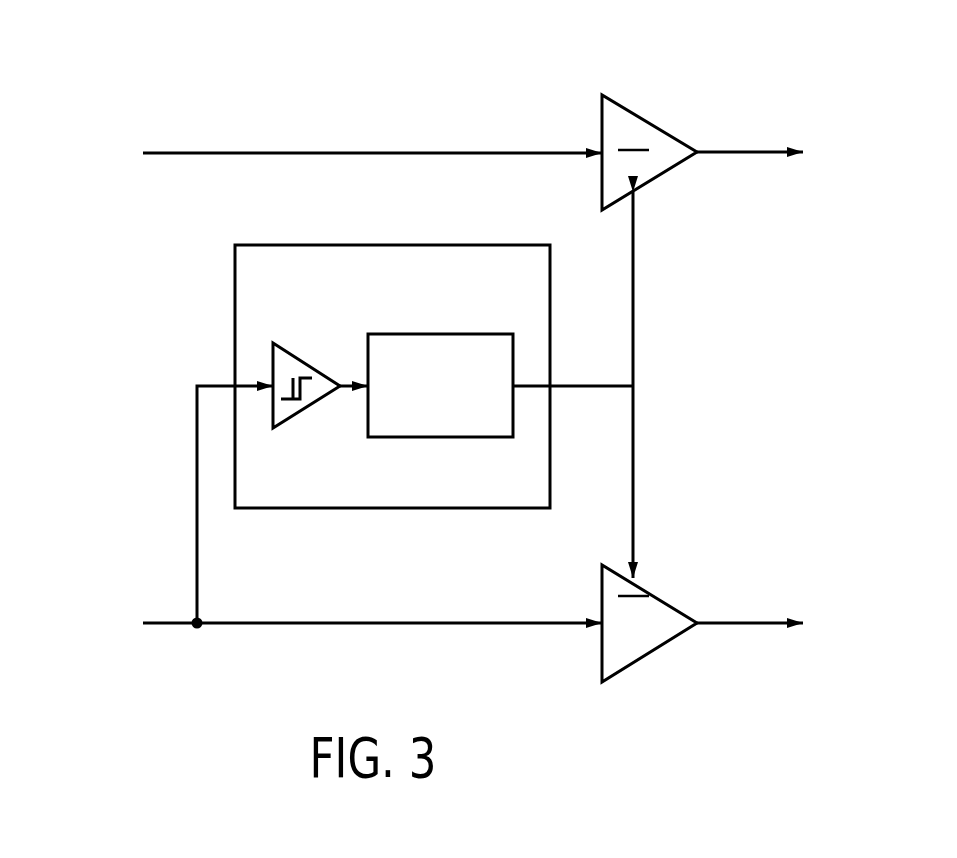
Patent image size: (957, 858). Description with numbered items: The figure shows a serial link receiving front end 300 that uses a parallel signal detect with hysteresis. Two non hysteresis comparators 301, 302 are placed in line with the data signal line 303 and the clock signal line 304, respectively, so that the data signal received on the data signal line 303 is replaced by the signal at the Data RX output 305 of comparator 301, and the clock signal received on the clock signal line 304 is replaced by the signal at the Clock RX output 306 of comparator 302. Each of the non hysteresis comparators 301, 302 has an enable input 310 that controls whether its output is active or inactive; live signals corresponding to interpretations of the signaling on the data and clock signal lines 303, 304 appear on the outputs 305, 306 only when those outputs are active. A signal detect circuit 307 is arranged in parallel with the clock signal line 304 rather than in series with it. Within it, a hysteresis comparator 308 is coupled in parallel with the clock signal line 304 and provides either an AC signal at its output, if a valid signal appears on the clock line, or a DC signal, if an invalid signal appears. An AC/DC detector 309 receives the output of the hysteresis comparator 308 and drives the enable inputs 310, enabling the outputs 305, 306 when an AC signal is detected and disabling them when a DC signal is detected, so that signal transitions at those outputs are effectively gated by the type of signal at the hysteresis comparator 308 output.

The serial link receiving front end 300 is at (399, 34).
The non hysteresis comparator 301 is at (640, 118).
The non hysteresis comparator 302 is at (655, 649).
The data signal line 303 is at (150, 156).
The clock signal line 304 is at (150, 626).
The Data RX output 305 is at (756, 152).
The Clock RX output 306 is at (736, 622).
The signal detect circuit 307 is at (495, 288).
The hysteresis comparator 308 is at (305, 408).
The AC/DC detector 309 is at (464, 430).
The enable input 310 is at (636, 340).